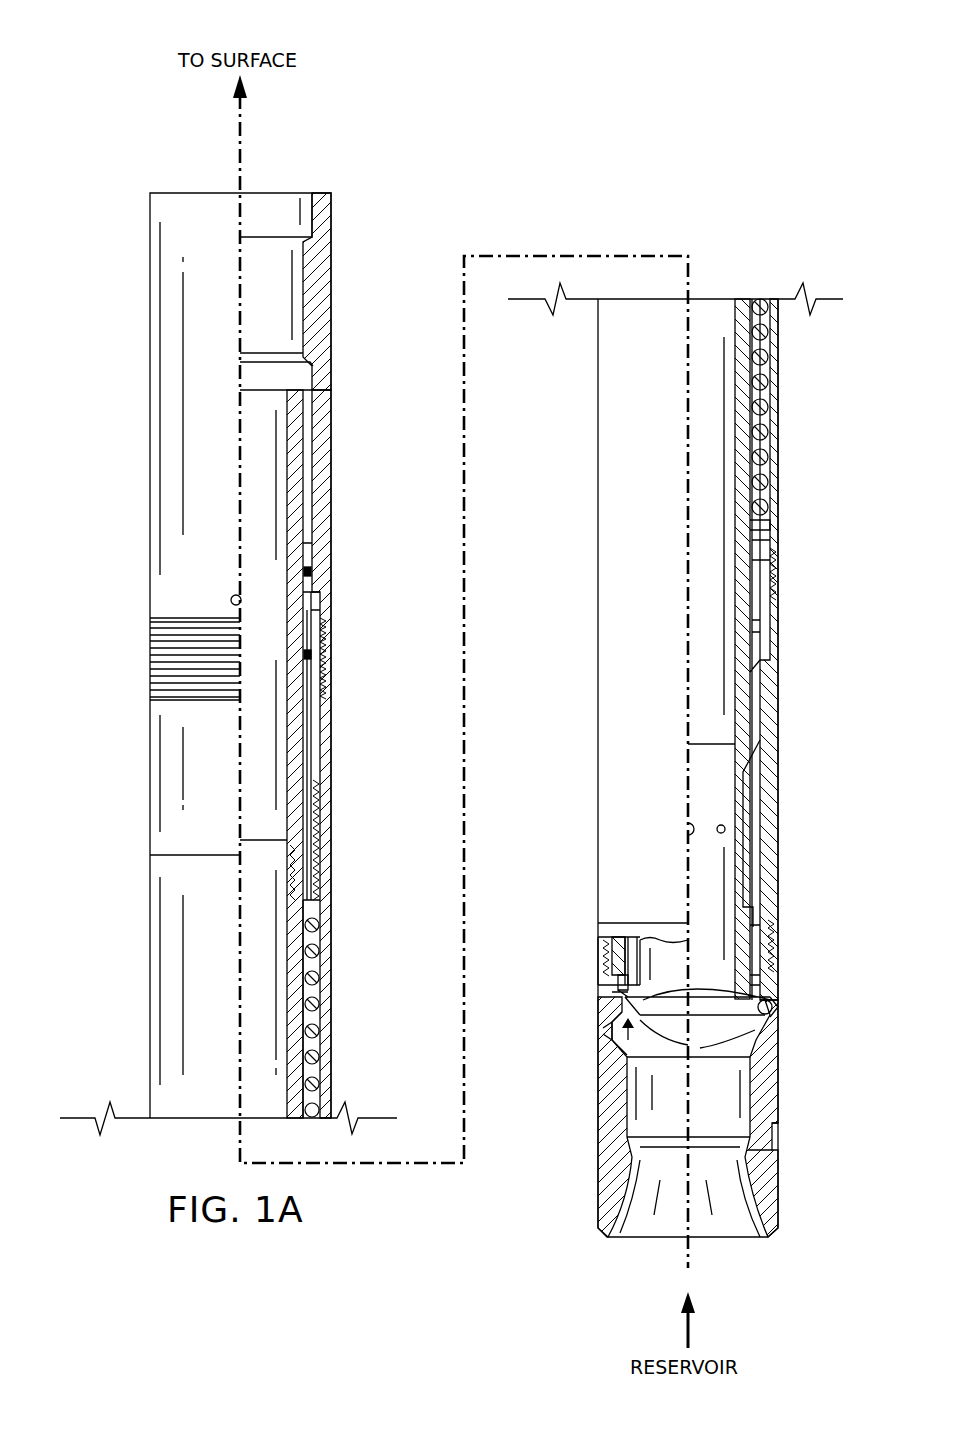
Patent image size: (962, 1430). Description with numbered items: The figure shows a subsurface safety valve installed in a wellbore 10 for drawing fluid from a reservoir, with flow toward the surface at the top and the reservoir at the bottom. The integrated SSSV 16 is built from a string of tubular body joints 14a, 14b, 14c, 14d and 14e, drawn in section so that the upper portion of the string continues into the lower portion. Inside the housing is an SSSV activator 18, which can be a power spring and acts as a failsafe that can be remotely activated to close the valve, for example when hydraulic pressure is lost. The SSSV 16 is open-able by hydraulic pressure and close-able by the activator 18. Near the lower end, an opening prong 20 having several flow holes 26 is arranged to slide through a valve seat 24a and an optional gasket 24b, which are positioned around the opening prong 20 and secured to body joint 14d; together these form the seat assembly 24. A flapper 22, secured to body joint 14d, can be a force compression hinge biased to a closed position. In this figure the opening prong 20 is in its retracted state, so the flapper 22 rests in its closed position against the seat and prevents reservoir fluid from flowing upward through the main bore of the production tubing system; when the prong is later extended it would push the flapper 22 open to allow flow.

The wellbore 10 is at (82, 57).
The body joint 14a is at (320, 262).
The inner tubular housing section 14b is at (296, 466).
The outer housing section 14c is at (300, 1055).
The body joint 14d is at (768, 774).
The body joint 14e is at (768, 1180).
The SSSV 16 is at (815, 996).
The SSSV activator 18 is at (762, 380).
The opening prong 20 is at (711, 768).
The flapper 22 is at (705, 1017).
The valve seat 24 is at (608, 1030).
The valve seat 24a is at (620, 982).
The gasket 24b is at (618, 995).
The flow holes 26 is at (717, 829).